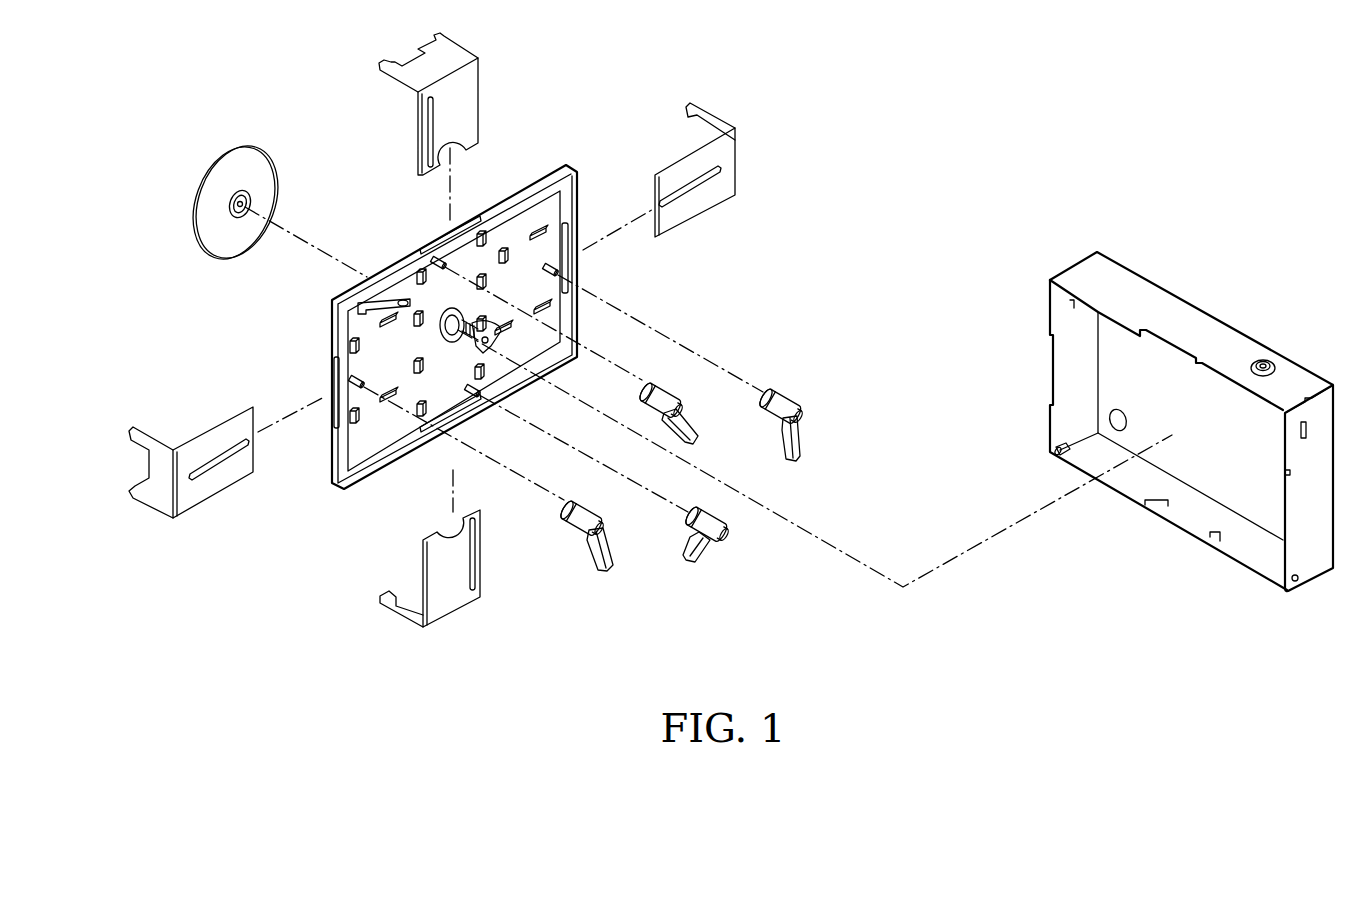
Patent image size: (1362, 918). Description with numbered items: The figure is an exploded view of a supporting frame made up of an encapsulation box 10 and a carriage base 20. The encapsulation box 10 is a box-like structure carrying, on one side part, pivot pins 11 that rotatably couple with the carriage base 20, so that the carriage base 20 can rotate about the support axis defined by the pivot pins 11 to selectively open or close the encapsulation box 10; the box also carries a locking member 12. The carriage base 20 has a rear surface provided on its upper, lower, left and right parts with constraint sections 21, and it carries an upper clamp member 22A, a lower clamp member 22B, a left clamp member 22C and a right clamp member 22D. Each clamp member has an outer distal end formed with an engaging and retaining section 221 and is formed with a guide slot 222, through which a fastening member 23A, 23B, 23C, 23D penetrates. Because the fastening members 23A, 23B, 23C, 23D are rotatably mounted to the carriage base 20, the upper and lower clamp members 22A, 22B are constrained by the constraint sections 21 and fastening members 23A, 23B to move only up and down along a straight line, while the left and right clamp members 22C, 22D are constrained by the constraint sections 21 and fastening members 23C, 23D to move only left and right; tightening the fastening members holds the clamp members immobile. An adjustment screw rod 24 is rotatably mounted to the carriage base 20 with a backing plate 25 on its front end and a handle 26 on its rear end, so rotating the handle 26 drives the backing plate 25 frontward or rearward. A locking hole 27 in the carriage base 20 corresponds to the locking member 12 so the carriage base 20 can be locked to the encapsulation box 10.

The encapsulation box 10 is at (1192, 325).
The pivot pins 11 is at (1056, 452).
The locking member 12 is at (1263, 362).
The carriage base 20 is at (541, 172).
The constraint sections 21 is at (483, 244).
The upper clamp member 22A is at (470, 95).
The lower clamp member 22B is at (445, 600).
The left clamp member 22C is at (674, 220).
The right clamp member 22D is at (192, 498).
The engaging and retaining section 221 is at (453, 53).
The guide slot 222 is at (436, 115).
The fastening member 23A is at (700, 436).
The fastening member 23B is at (715, 543).
The fastening member 23C is at (800, 438).
The fastening member 23D is at (615, 563).
The adjustment screw rod 24 is at (455, 333).
The backing plate 25 is at (233, 243).
The handle 26 is at (493, 336).
The locking hole 27 is at (403, 299).